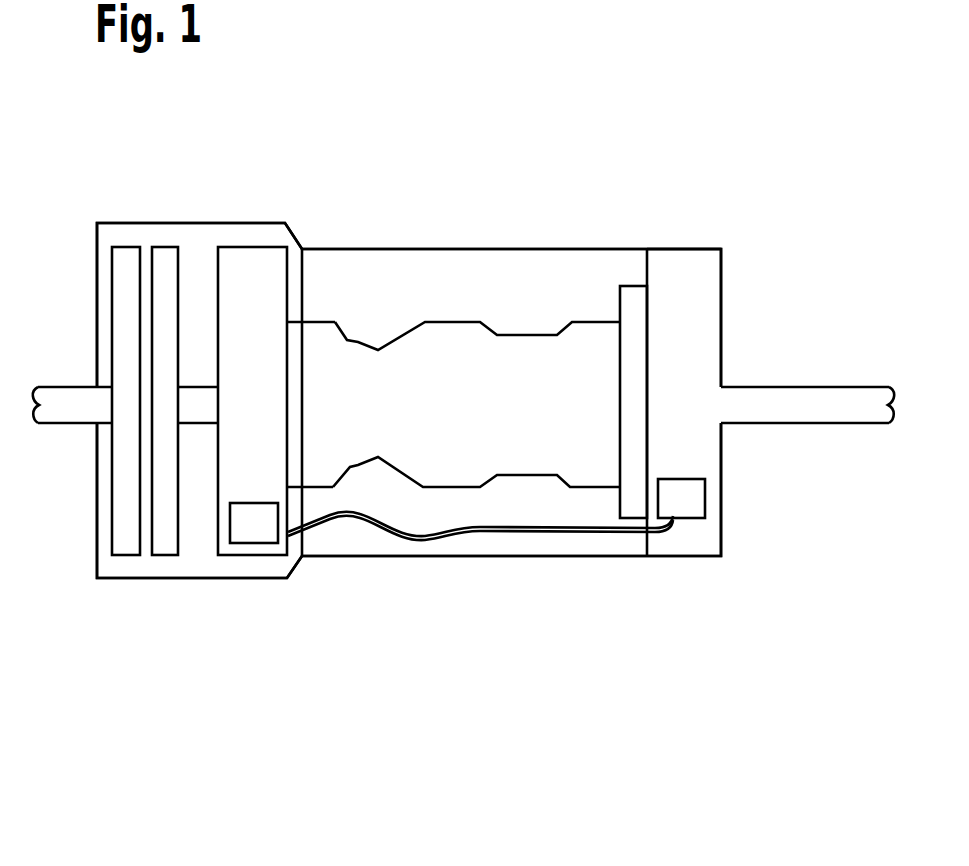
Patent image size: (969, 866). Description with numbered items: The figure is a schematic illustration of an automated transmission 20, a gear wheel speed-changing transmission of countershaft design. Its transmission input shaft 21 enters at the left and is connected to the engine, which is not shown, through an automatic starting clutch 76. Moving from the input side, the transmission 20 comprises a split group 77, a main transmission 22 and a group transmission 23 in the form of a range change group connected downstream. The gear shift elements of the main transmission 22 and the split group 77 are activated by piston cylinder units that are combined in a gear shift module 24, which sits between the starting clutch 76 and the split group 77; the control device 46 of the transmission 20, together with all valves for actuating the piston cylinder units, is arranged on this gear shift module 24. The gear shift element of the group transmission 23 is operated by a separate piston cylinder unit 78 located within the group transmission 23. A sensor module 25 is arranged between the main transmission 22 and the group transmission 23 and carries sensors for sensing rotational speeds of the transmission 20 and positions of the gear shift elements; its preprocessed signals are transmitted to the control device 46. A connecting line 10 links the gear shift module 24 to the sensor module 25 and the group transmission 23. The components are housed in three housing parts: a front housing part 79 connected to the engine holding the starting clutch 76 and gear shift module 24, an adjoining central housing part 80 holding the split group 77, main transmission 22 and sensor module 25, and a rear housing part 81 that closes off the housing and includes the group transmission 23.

The connecting line 10 is at (513, 534).
The automated transmission 20 is at (777, 234).
The transmission input shaft 21 is at (203, 413).
The main transmission 22 is at (452, 333).
The group transmission 23 is at (702, 312).
The gear shift module 24 is at (250, 258).
The sensor module 25 is at (632, 290).
The control device 46 is at (255, 525).
The automatic starting clutch 76 is at (123, 543).
The split group 77 is at (328, 473).
The piston cylinder unit 78 is at (695, 503).
The front housing part 79 is at (138, 223).
The central housing part 80 is at (373, 249).
The rear housing part 81 is at (693, 249).